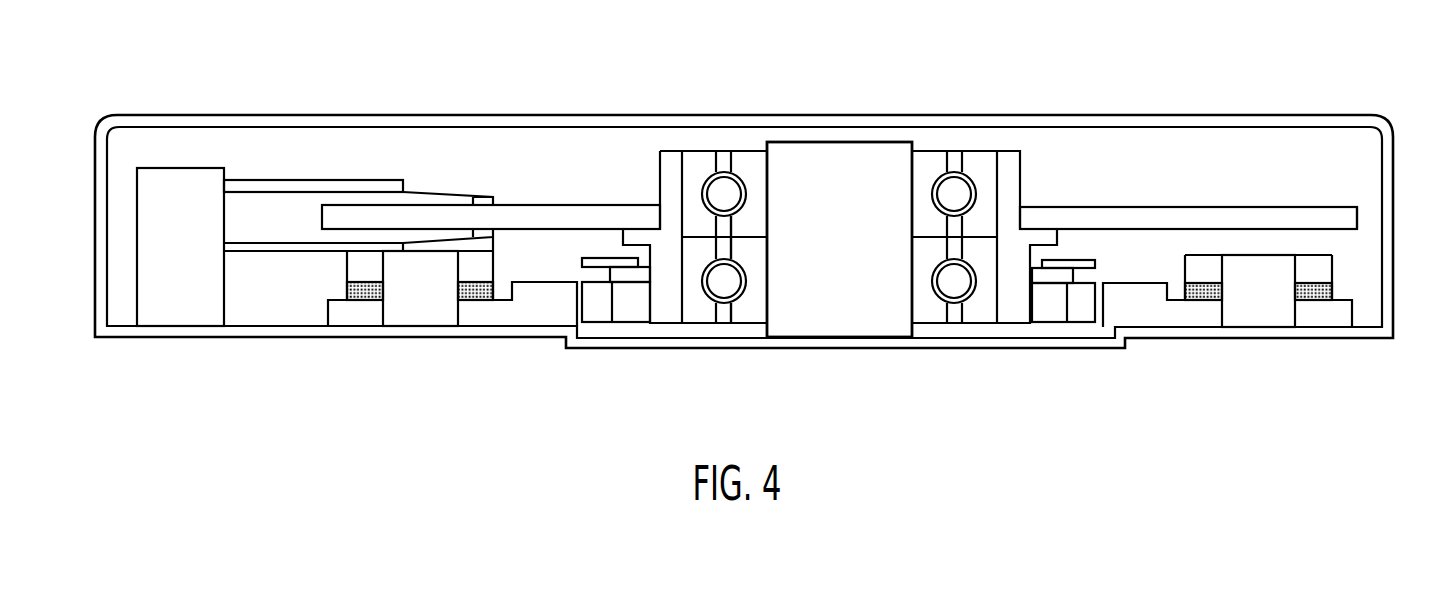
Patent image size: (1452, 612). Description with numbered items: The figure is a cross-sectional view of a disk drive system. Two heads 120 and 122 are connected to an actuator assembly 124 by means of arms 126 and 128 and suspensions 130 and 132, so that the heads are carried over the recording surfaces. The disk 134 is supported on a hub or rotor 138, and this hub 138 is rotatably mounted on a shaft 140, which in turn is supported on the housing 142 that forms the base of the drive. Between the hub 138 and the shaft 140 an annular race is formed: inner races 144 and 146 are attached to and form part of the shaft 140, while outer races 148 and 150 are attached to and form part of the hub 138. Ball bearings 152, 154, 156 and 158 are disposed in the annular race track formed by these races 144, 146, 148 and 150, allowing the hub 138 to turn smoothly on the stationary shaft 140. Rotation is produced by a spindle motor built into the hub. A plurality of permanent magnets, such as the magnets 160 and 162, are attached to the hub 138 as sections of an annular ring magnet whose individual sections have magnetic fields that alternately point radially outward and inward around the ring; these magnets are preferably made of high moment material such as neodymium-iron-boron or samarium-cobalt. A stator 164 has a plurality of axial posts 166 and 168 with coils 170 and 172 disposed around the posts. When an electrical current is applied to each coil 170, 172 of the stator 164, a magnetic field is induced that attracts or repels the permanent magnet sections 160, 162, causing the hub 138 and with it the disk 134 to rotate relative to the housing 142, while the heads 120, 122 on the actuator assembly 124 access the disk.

The head 120 is at (497, 207).
The head 122 is at (494, 235).
The actuator assembly 124 is at (178, 306).
The arm 126 is at (297, 241).
The arm 128 is at (373, 180).
The suspension 130 is at (416, 192).
The suspension 132 is at (453, 237).
The disk 134 is at (575, 215).
The hub or rotor 138 is at (1008, 163).
The shaft 140 is at (828, 162).
The housing 142 is at (276, 332).
The inner race 144 is at (748, 163).
The inner race 146 is at (753, 318).
The outer race 148 is at (695, 163).
The outer race 150 is at (700, 318).
The ball bearing 152 is at (725, 194).
The ball bearing 154 is at (725, 281).
The ball bearing 156 is at (954, 194).
The ball bearing 158 is at (954, 281).
The permanent magnet 160 is at (1088, 297).
The permanent magnet 162 is at (593, 297).
The stator 164 is at (1357, 253).
The axial post 166 is at (1257, 318).
The axial post 168 is at (425, 307).
The coil 170 is at (1330, 298).
The coil 172 is at (347, 292).